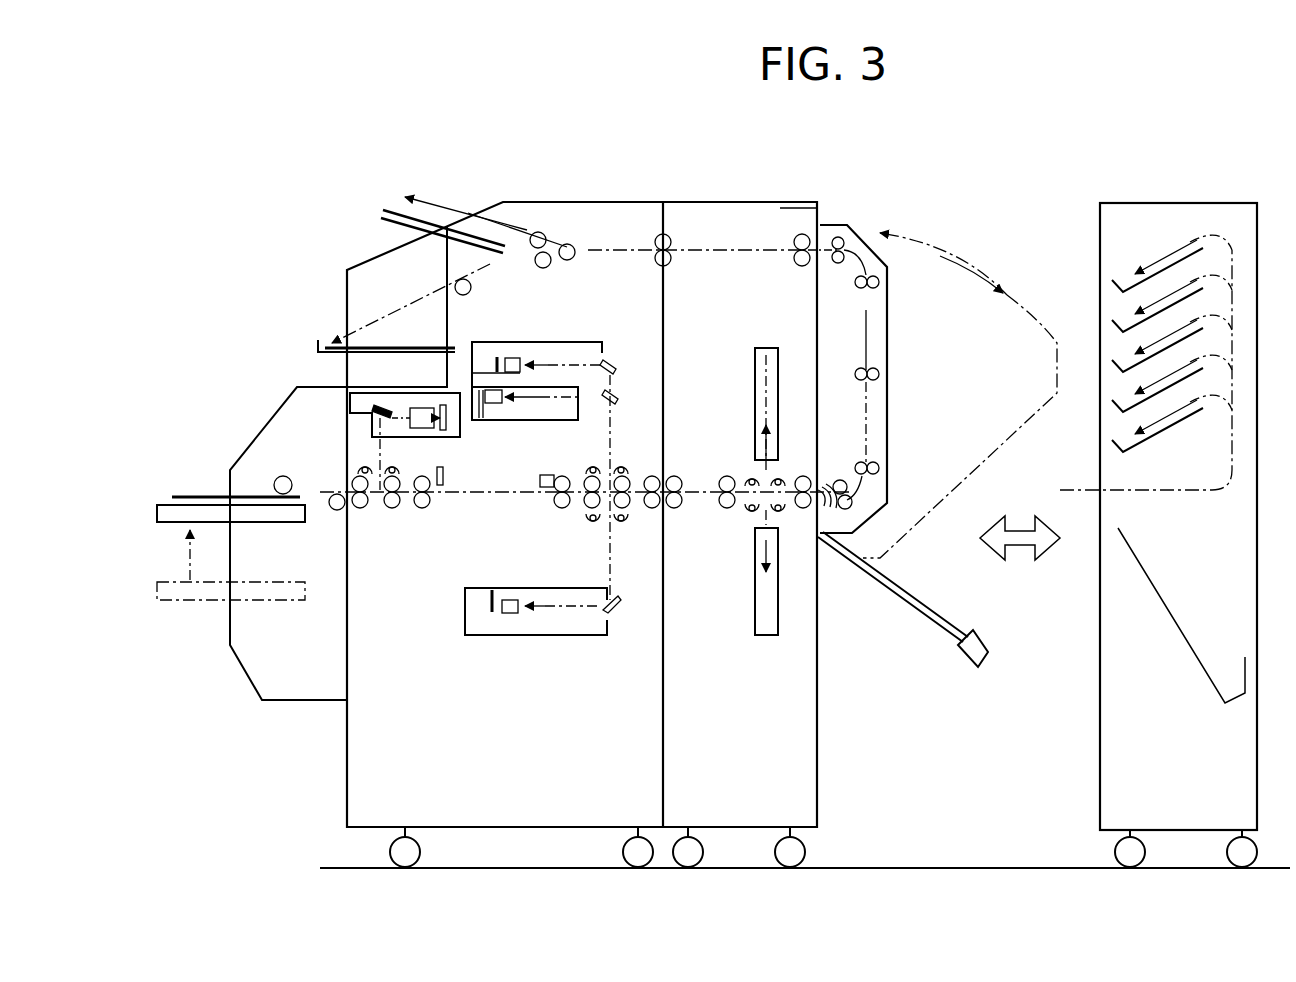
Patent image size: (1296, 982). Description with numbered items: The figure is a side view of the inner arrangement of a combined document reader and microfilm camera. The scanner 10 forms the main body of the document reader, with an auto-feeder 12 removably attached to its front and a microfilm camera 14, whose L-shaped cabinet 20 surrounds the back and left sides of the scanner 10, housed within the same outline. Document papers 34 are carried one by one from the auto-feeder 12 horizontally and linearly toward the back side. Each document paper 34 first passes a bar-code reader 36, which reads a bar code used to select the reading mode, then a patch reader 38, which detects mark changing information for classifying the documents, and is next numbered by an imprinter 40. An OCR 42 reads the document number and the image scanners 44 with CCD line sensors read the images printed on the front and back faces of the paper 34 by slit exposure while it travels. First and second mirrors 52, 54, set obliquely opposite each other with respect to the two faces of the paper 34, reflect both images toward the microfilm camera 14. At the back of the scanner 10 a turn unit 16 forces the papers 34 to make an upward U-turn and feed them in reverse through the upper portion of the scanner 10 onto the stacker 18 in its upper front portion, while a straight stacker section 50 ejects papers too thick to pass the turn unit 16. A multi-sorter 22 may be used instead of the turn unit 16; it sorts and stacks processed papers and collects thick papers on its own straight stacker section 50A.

The scanner 10 is at (590, 196).
The auto-feeder 12 is at (268, 428).
The microfilm camera 14 is at (778, 196).
The turn unit 16 is at (858, 230).
The stacker 18 is at (390, 268).
The cabinet 20 is at (698, 197).
The multi-sorter 22 is at (1170, 202).
The document paper 34 is at (205, 496).
The bar-code reader 36 is at (365, 425).
The patch reader 38 is at (445, 496).
The imprinter 40 is at (538, 490).
The OCR 42 is at (505, 420).
The image scanner 44 is at (585, 340).
The straight stacker section 50 is at (920, 625).
The straight stacker section 50A is at (1180, 630).
The first mirror 52 is at (755, 368).
The second mirror 54 is at (755, 630).